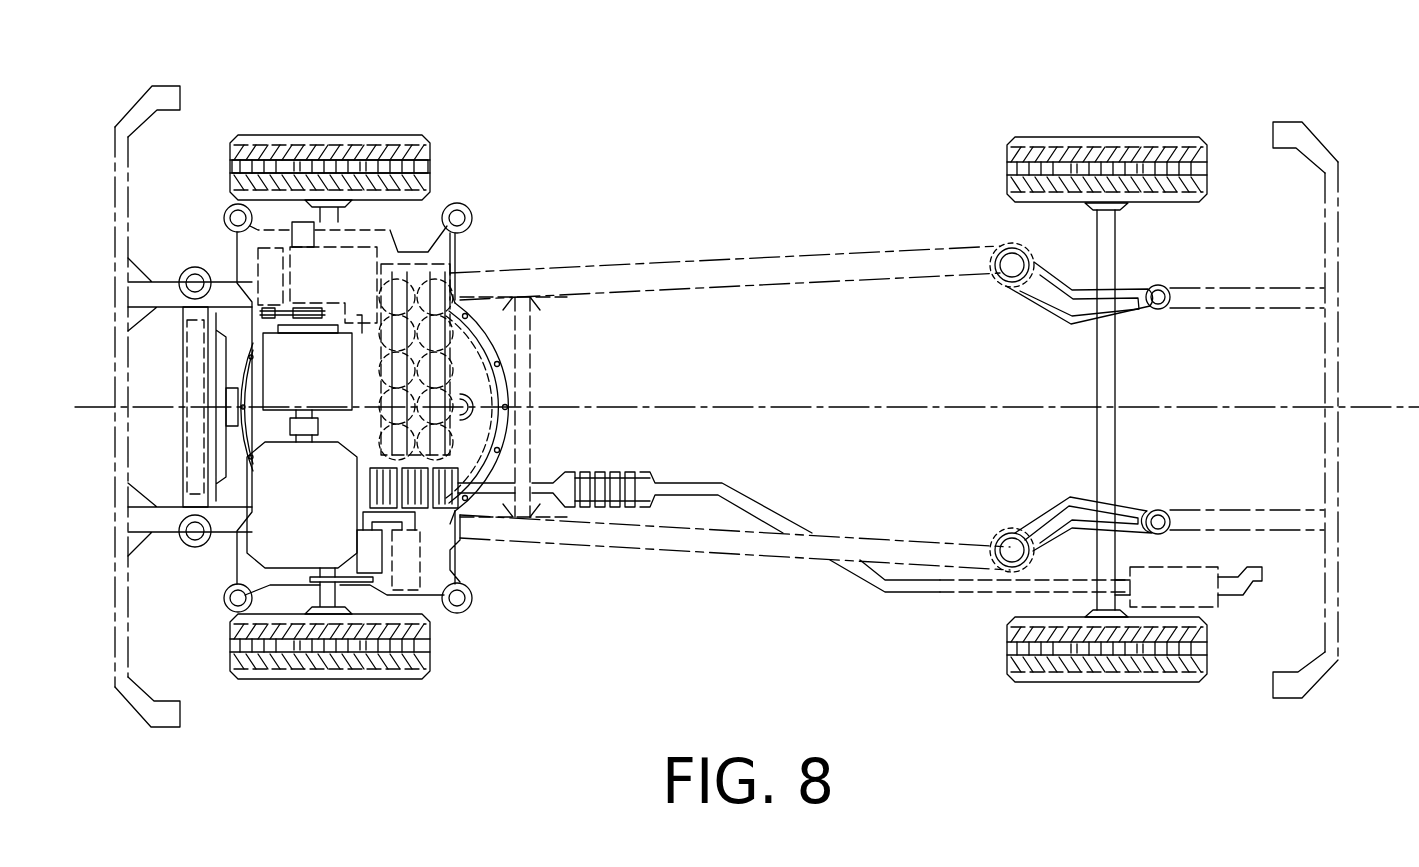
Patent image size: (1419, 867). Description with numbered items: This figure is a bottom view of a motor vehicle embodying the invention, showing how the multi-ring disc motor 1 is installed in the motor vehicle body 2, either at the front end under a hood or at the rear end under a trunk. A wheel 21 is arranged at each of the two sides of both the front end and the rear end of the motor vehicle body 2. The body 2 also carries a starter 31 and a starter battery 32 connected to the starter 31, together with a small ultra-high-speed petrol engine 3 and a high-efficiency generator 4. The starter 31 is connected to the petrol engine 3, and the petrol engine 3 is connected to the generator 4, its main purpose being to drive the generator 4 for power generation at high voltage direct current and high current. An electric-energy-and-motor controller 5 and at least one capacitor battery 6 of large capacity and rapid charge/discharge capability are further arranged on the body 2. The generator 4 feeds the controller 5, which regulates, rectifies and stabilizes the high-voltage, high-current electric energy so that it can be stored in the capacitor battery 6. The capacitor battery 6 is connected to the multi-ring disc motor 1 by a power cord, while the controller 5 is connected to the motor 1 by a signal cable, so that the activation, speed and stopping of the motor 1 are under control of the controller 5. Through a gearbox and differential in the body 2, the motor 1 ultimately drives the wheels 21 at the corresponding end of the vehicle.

The multi-ring disc motor 1 is at (483, 388).
The motor vehicle body 2 is at (122, 382).
The small ultra-high-speed petrol engine 3 is at (258, 667).
The high-efficiency generator 4 is at (290, 360).
The electric-energy-and-motor controller 5 is at (430, 178).
The capacitor battery 6 is at (490, 337).
The wheel 21 is at (324, 163).
The starter 31 is at (372, 565).
The starter battery 32 is at (412, 578).